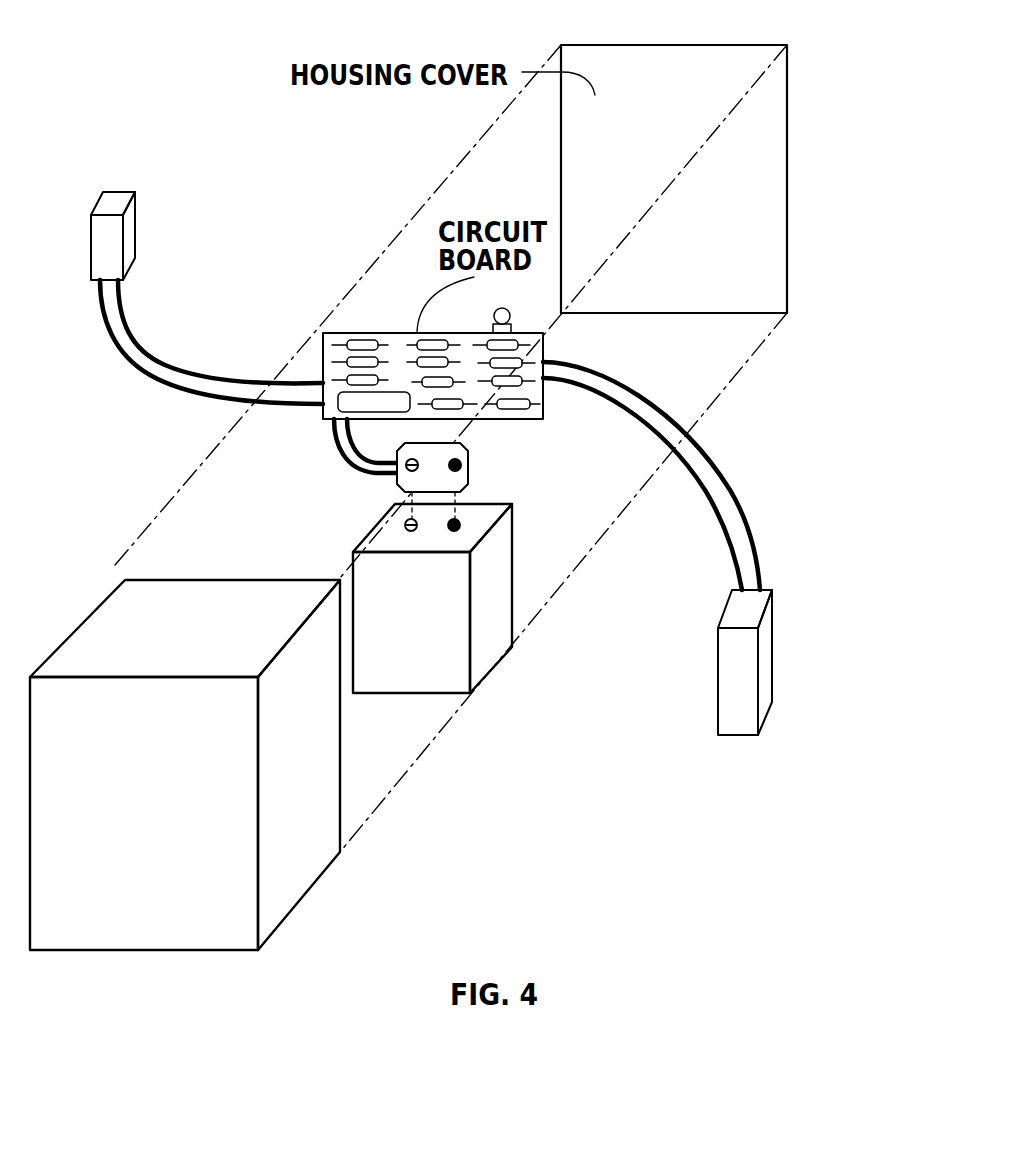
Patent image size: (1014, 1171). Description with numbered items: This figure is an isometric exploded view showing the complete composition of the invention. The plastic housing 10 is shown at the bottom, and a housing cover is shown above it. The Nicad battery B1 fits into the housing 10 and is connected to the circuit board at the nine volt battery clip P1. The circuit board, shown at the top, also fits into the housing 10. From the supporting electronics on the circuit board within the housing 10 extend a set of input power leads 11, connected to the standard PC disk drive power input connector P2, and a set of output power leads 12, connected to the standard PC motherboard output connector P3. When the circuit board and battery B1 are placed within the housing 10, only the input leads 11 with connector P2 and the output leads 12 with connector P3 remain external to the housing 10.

The plastic housing 10 is at (185, 765).
The input power leads 11 is at (625, 412).
The output power leads 12 is at (155, 367).
The 9 Volt battery clip P1 is at (425, 468).
The standard PC disk power input connector P2 is at (708, 695).
The standard output PC motherboard connector P3 is at (235, 196).
The 9 Volt Nicad battery B1 is at (483, 583).